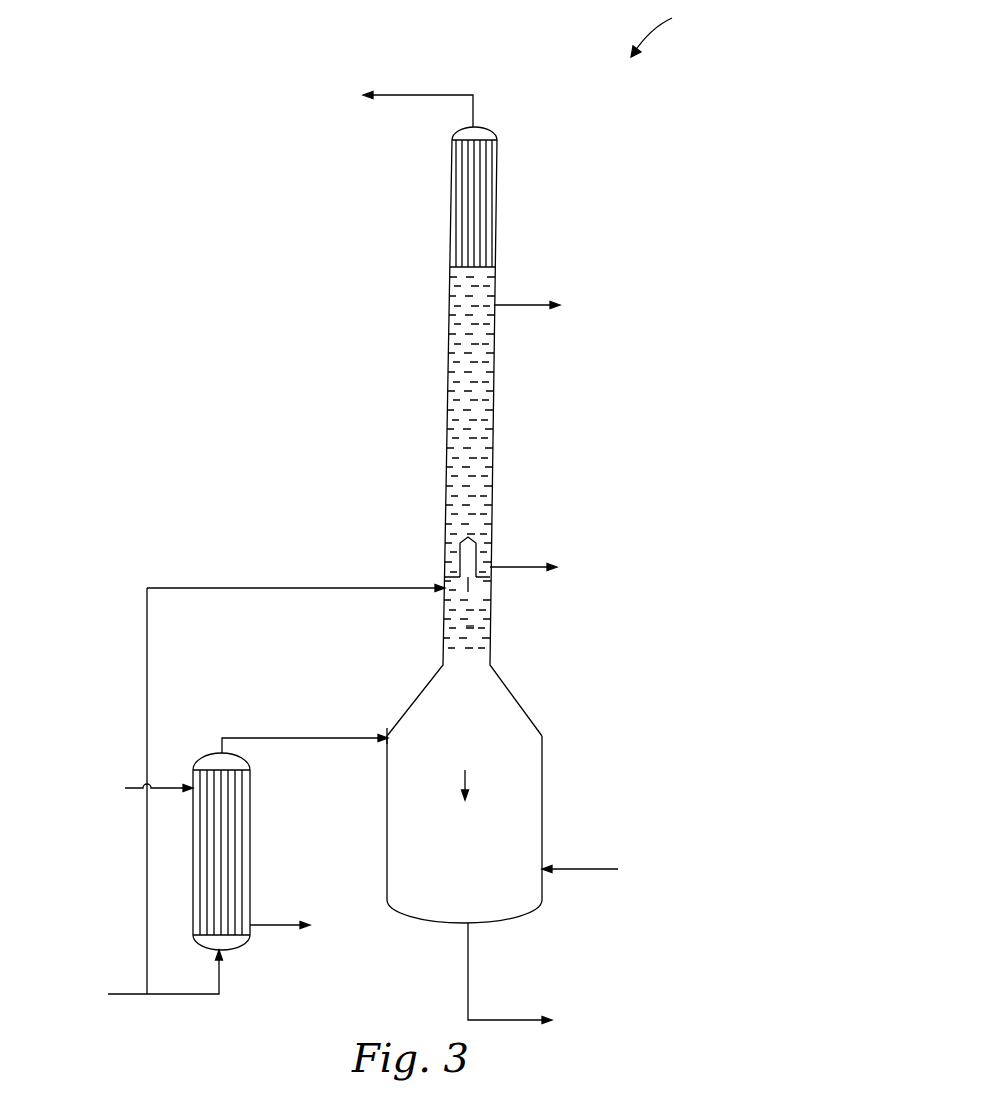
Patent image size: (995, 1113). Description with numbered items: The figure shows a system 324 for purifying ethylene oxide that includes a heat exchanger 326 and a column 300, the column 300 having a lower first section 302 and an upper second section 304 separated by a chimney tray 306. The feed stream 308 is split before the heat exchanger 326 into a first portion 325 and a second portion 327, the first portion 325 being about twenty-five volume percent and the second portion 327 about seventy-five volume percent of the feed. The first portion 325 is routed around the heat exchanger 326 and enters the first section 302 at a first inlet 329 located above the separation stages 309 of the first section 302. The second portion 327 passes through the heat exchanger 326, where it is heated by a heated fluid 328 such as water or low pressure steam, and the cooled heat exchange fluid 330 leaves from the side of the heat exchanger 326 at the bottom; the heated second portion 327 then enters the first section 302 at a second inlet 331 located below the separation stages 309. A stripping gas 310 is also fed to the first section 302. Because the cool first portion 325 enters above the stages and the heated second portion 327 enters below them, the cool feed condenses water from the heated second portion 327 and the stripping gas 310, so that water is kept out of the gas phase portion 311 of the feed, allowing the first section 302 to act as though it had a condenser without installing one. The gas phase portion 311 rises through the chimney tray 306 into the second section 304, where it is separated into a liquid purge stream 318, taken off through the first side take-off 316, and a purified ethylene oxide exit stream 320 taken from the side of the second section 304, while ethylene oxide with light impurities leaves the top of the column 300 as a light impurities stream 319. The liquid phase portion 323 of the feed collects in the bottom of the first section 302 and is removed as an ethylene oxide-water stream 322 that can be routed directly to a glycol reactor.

The column 300 is at (494, 434).
The first section 302 is at (542, 782).
The second section 304 is at (494, 380).
The chimney tray 306 is at (477, 578).
The feed stream 308 is at (145, 978).
The separation stages 309 is at (470, 626).
The stripping gas 310 is at (605, 869).
The gas phase portion 311 is at (466, 592).
The first side take-off 316 is at (490, 566).
The purge stream 318 is at (546, 567).
The light impurities stream 319 is at (395, 105).
The purified ethylene oxide exit stream 320 is at (550, 304).
The ethylene oxide-water stream 322 is at (536, 977).
The liquid phase portion 323 is at (465, 770).
The system 324 is at (677, 28).
The first portion 325 is at (255, 586).
The heat exchanger 326 is at (250, 797).
The second portion 327 is at (282, 737).
The heated fluid 328 is at (140, 788).
The first inlet 329 is at (445, 580).
The cooled heat exchange fluid 330 is at (303, 925).
The second inlet 331 is at (387, 736).